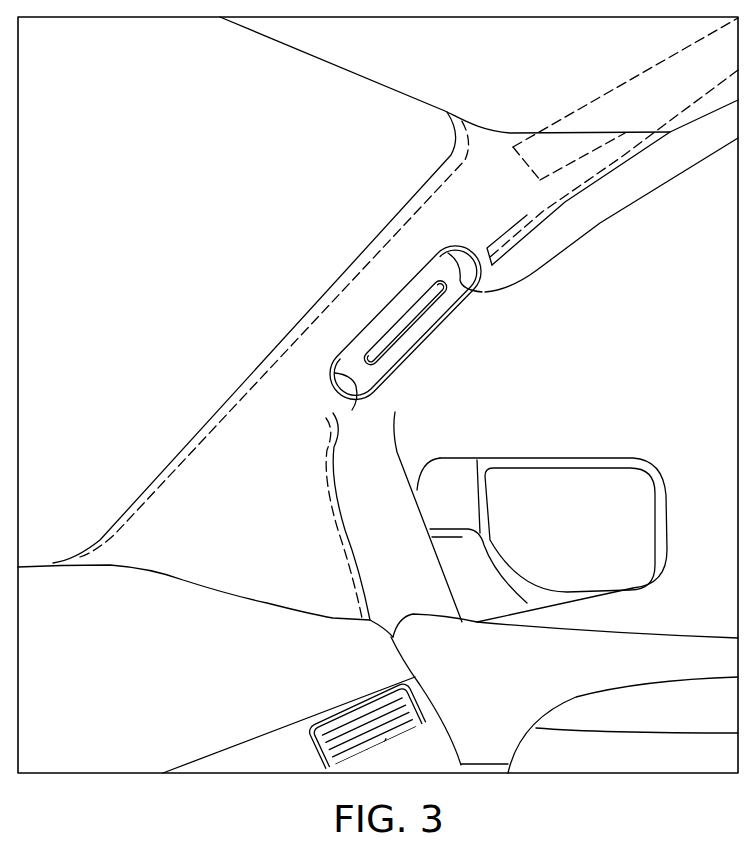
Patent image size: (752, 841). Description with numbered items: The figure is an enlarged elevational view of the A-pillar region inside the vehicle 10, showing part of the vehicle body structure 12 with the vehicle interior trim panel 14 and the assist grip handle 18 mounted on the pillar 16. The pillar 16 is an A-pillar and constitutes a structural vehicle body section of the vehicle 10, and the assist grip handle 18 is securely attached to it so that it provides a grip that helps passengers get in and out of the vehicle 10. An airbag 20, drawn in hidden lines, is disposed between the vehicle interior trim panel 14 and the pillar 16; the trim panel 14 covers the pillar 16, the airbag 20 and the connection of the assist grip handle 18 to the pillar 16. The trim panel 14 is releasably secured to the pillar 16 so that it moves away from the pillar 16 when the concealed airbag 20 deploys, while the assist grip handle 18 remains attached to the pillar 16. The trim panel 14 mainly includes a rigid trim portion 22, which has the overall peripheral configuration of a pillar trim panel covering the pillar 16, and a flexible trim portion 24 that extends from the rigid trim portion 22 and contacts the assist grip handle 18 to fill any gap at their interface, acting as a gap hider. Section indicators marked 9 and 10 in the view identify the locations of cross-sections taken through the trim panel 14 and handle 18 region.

The vehicle body structure 12 is at (258, 242).
The vehicle interior trim panel 14 is at (614, 178).
The pillar 16 is at (434, 190).
The assist grip handle 18 is at (403, 328).
The airbag 20 is at (603, 85).
The rigid trim portion 22 is at (267, 413).
The flexible trim portion 24 is at (350, 338).
The section line for FIG. 9 is at (367, 293).
The vehicle 10 is at (527, 215).